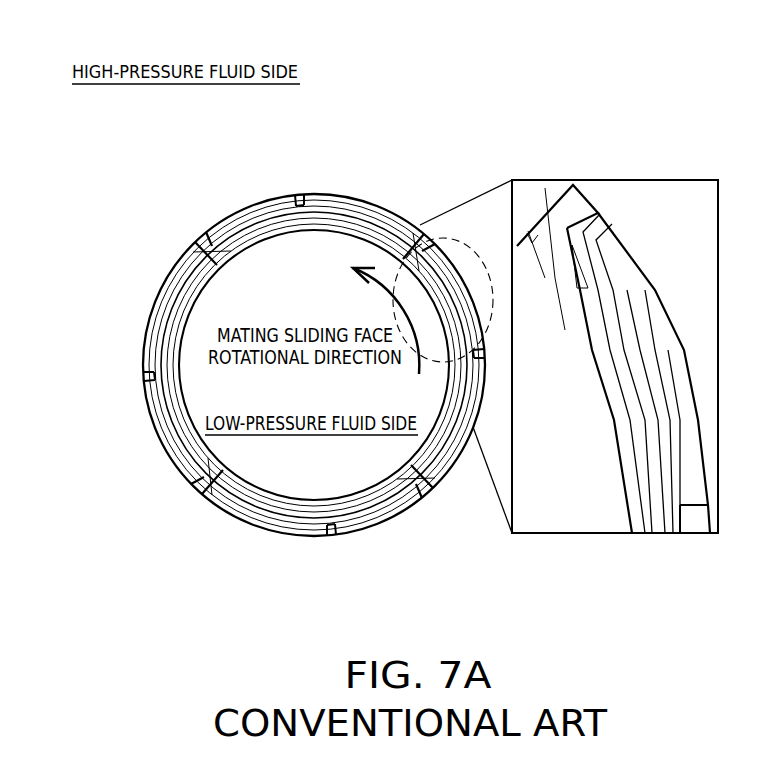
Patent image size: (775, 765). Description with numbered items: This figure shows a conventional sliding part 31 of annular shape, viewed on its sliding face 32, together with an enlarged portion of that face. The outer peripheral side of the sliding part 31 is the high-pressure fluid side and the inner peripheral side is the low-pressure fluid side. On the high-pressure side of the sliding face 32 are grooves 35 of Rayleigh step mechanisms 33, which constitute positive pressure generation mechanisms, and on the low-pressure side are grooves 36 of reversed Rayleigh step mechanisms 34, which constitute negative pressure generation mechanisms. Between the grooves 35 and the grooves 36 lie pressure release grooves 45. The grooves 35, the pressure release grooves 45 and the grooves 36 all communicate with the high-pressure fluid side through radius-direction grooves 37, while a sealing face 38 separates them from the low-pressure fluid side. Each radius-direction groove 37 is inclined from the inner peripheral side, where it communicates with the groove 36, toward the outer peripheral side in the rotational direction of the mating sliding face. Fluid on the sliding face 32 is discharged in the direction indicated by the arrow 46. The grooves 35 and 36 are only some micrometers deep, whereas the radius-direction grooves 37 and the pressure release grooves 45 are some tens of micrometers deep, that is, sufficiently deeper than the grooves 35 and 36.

The sliding part 31 is at (283, 196).
The sliding face 32 is at (195, 243).
The Rayleigh step mechanism 33 is at (405, 208).
The reversed Rayleigh step mechanism 34 is at (330, 240).
The groove 35 is at (636, 337).
The groove 36 is at (630, 398).
The radius-direction groove 37 is at (322, 200).
The sealing face 38 is at (630, 457).
The pressure release groove 45 is at (143, 323).
The arrow 46 is at (557, 190).